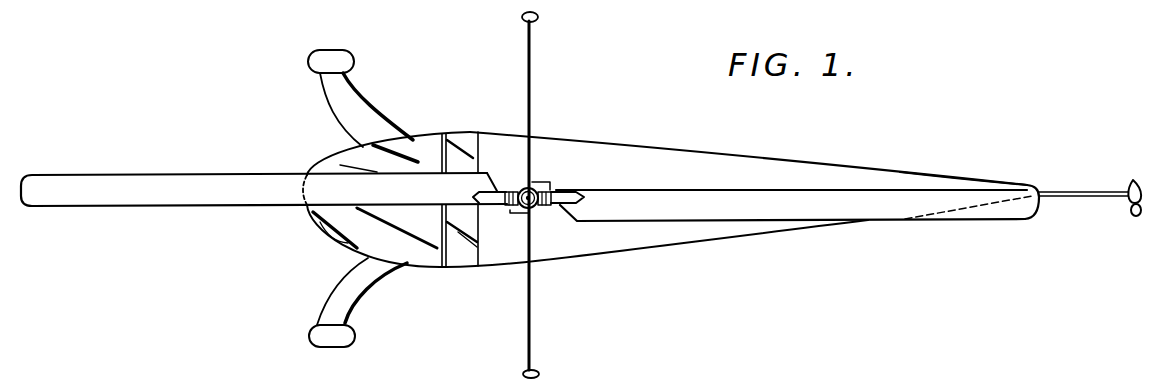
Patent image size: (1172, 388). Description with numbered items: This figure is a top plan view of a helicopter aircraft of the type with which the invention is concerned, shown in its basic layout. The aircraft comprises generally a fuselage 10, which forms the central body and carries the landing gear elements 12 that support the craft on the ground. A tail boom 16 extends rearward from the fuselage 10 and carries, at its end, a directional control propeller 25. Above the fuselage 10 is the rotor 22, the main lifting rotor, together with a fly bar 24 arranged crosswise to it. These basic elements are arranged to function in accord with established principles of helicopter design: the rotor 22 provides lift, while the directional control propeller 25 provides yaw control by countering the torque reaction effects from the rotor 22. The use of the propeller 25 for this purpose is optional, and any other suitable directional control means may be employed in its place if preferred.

The fuselage 10 is at (787, 233).
The landing gear element 12 is at (351, 63).
The tail boom 16 is at (972, 181).
The rotor 22 is at (178, 203).
The fly bar 24 is at (532, 78).
The directional control propeller 25 is at (1130, 213).